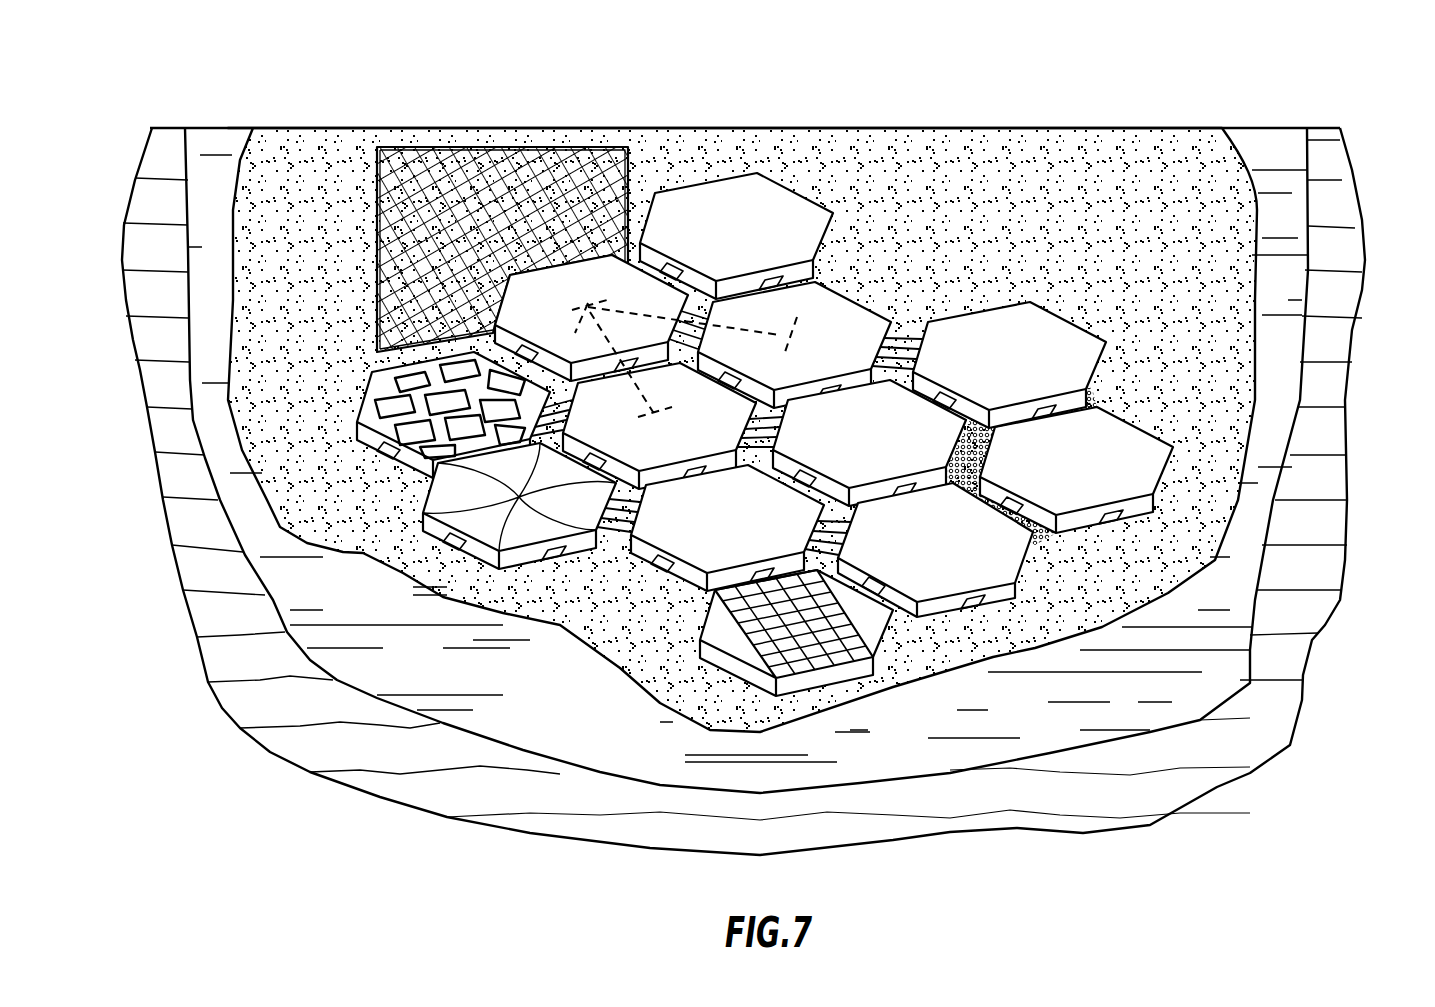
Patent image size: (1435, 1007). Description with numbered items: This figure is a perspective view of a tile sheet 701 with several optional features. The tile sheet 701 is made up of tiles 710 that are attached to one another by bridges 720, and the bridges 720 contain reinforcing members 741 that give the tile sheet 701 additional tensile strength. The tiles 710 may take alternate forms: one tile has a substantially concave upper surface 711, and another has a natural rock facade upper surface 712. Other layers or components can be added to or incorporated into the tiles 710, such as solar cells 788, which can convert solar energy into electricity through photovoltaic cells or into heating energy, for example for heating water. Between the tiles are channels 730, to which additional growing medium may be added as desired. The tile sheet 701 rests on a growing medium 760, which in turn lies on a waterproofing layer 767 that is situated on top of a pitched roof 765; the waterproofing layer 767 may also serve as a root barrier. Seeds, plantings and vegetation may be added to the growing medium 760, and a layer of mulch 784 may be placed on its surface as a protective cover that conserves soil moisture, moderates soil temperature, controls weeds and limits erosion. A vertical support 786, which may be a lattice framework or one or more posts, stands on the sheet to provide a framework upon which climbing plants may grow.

The tile sheet 701 is at (1224, 81).
The tiles 710 is at (1073, 316).
The substantially concave upper surface 711 is at (447, 525).
The natural rock facade upper surface 712 is at (387, 383).
The bridges 720 is at (912, 343).
The channels 730 is at (612, 540).
The reinforcing members 741 is at (655, 392).
The growing medium 760 is at (1208, 423).
The pitched roof 765 is at (1278, 705).
The waterproofing layer 767 is at (1222, 593).
The layer of mulch 784 is at (980, 477).
The vertical support 786 is at (497, 148).
The solar cells 788 is at (837, 653).